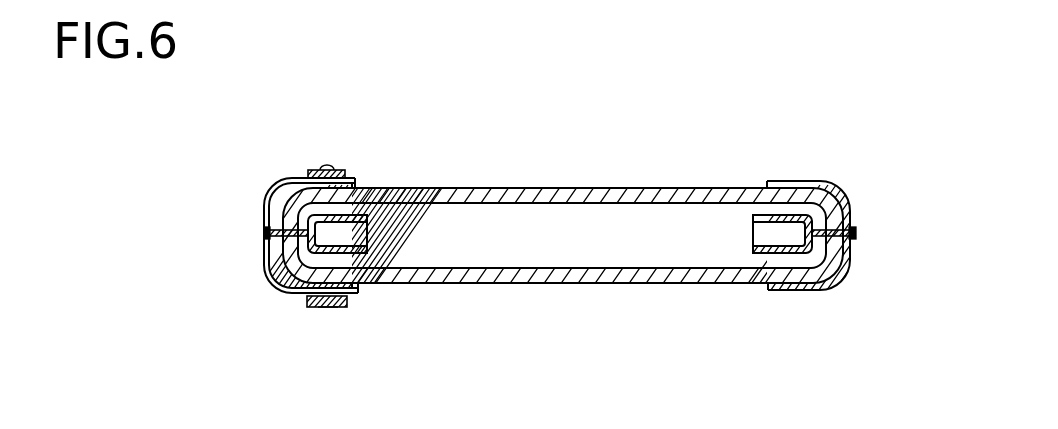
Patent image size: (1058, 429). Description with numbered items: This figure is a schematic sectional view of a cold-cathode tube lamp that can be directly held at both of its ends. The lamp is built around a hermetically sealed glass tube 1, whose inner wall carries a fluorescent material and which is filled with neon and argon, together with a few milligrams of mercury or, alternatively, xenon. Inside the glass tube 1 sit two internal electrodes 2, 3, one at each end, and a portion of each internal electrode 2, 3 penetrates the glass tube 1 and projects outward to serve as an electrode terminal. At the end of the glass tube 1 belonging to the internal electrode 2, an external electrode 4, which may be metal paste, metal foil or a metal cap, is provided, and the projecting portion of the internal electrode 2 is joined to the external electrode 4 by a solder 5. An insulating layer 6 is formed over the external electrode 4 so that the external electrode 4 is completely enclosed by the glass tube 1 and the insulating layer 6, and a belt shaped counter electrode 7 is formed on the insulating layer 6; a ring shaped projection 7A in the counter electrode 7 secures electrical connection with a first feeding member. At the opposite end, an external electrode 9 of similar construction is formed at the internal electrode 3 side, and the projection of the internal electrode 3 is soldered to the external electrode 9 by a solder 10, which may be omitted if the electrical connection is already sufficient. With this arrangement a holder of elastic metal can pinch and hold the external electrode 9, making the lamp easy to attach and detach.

The glass tube 1 is at (563, 189).
The internal electrode 2 is at (363, 189).
The internal electrode 3 is at (752, 189).
The external electrode 4 is at (287, 184).
The solder 5 is at (266, 233).
The insulating layer 6 is at (279, 183).
The belt shaped counter electrode 7 is at (313, 307).
The ring shaped projection 7A is at (333, 307).
The external electrode 9 is at (833, 183).
The solder 10 is at (854, 230).